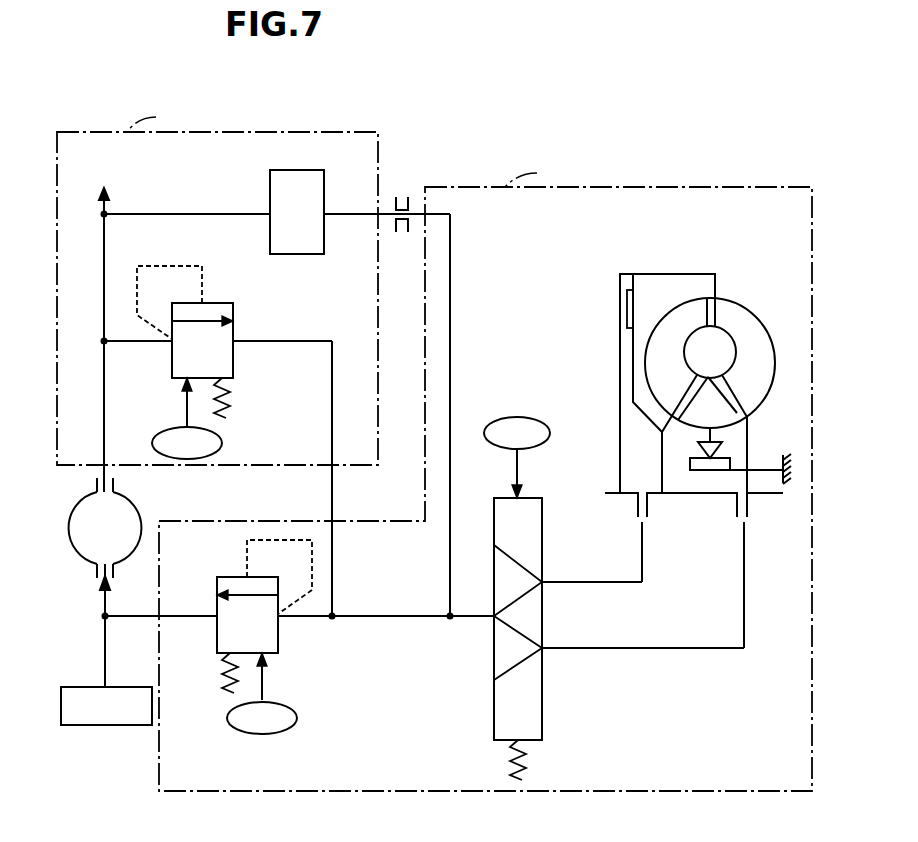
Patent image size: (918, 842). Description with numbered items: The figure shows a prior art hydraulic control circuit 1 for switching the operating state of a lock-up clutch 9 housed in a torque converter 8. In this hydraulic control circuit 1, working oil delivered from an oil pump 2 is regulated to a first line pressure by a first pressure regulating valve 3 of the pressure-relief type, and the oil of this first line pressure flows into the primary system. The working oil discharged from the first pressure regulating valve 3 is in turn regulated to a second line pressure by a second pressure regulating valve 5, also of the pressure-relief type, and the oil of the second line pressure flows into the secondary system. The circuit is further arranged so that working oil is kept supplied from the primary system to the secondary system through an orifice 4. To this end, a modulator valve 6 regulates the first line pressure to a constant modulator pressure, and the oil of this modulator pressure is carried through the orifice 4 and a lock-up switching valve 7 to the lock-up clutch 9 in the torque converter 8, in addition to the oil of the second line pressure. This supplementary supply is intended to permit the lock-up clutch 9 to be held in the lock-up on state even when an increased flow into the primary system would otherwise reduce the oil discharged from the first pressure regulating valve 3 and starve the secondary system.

The hydraulic control circuit 1 is at (541, 84).
The oil pump 2 is at (122, 507).
The first pressure regulating valve 3 is at (222, 310).
The orifice 4 is at (402, 199).
The second pressure regulating valve 5 is at (228, 576).
The modulator valve 6 is at (274, 196).
The lock-up switching valve 7 is at (507, 513).
The torque converter 8 is at (756, 276).
The lock-up clutch 9 is at (634, 302).